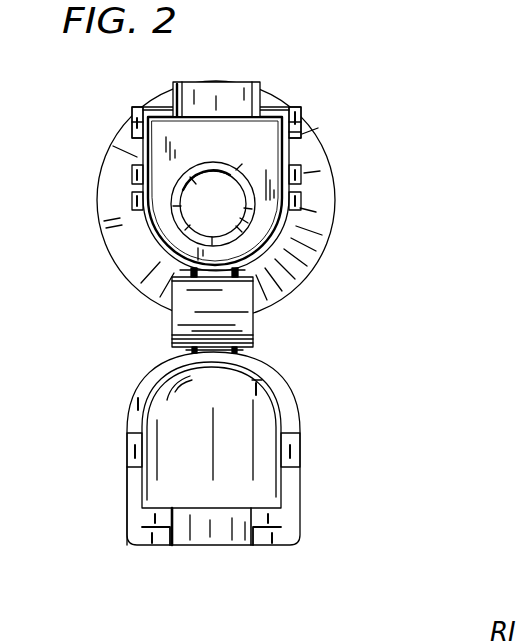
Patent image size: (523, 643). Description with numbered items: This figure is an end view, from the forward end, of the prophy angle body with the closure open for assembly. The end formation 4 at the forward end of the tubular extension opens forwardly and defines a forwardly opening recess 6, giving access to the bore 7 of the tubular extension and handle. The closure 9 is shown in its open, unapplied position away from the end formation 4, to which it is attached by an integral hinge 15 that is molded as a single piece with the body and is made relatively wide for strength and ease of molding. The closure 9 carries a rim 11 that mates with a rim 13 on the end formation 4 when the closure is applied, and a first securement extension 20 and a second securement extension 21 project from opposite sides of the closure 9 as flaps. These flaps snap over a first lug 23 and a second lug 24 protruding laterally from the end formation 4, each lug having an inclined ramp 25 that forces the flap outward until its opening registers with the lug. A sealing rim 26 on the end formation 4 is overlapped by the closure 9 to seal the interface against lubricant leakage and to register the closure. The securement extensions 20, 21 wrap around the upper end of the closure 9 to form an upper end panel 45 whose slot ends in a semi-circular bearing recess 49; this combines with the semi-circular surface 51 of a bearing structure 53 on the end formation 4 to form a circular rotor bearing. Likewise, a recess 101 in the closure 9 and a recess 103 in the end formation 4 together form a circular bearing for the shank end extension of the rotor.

The end formation 4 is at (287, 105).
The forwardly opening recess 6 is at (265, 158).
The bore 7 is at (237, 212).
The closure 9 is at (300, 412).
The rim 11 is at (129, 420).
The rim 13 is at (138, 232).
The integral hinge 15 is at (255, 315).
The first securement extension 20 is at (287, 493).
The second securement extension 21 is at (129, 498).
The first lug 23 is at (301, 124).
The second lug 24 is at (132, 112).
The ramp 25 is at (132, 127).
The sealing rim 26 is at (132, 211).
The upper end panel 45 is at (160, 545).
The bearing recess 49 is at (226, 545).
The semi-circular surface 51 is at (228, 92).
The bearing structure 53 is at (190, 83).
The recess 101 is at (273, 367).
The recess 103 is at (238, 280).